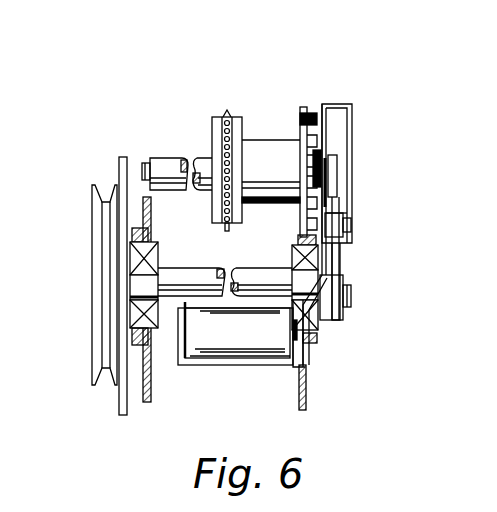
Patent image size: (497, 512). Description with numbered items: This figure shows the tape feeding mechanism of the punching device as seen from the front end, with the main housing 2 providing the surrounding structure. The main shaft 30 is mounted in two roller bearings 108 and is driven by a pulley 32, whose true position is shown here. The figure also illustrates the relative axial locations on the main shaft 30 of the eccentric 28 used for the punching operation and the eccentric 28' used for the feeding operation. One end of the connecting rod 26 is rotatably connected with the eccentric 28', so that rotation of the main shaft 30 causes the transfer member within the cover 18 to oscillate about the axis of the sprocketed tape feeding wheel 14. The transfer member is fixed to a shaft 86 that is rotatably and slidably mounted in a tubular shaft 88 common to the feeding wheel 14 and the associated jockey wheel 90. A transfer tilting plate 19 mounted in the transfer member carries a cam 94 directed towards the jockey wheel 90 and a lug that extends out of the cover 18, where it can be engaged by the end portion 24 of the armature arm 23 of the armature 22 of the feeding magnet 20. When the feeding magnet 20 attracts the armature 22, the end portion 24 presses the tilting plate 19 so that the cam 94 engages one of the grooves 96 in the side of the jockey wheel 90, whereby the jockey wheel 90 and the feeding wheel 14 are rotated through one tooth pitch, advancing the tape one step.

The main housing 2 is at (148, 392).
The sprocketed tape feeding wheel 14 is at (238, 117).
The cover 18 is at (352, 120).
The transfer tilting plate 19 is at (328, 150).
The feeding magnet 20 is at (243, 338).
The armature 22 is at (308, 345).
The armature arm 23 is at (351, 225).
The end portion of the armature arm 24 is at (338, 168).
The connecting rod 26 is at (340, 263).
The eccentric 28 is at (225, 268).
The eccentric 28' is at (358, 297).
The main shaft 30 is at (130, 297).
The pulley 32 is at (118, 160).
The shaft 86 is at (146, 163).
The tubular shaft 88 is at (170, 160).
The jockey wheel 90 is at (303, 128).
The cam 94 is at (315, 178).
The grooves 96 is at (304, 112).
The roller bearings 108 is at (149, 236).